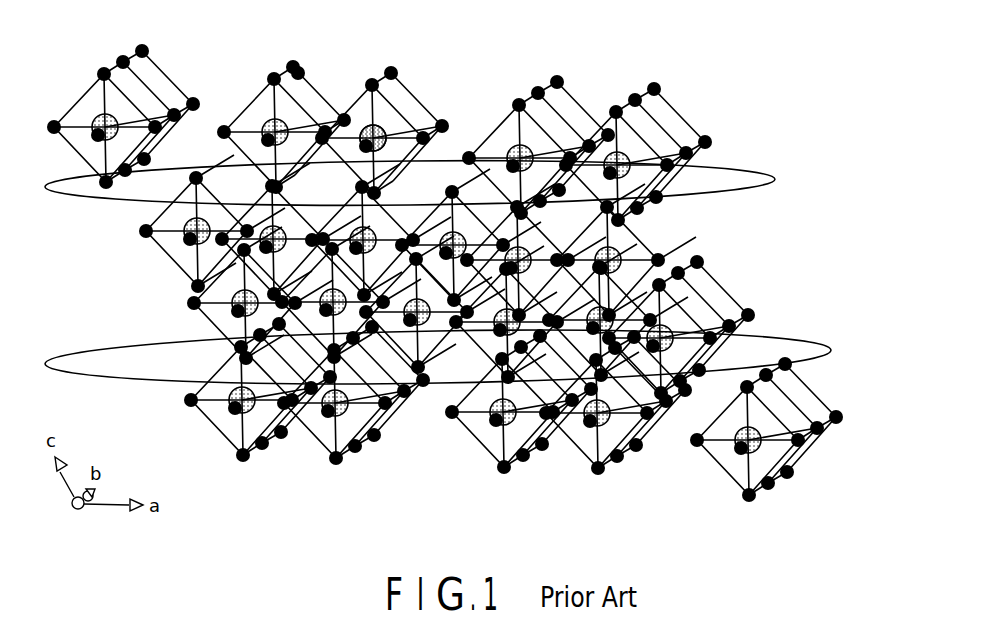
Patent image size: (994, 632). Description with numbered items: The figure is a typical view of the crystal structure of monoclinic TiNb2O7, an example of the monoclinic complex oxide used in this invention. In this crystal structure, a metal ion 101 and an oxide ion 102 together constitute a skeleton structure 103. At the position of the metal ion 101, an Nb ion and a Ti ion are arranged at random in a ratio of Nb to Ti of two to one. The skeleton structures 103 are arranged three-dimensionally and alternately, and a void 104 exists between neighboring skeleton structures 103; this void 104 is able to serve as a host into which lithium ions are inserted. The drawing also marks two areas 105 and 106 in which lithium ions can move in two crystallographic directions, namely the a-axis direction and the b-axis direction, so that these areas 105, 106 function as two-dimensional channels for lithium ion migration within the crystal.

The metal ion 101 is at (383, 128).
The oxide ion 102 is at (300, 67).
The skeleton structure 103 is at (490, 120).
The void 104 is at (325, 180).
The area 105 is at (750, 170).
The area 106 is at (790, 348).